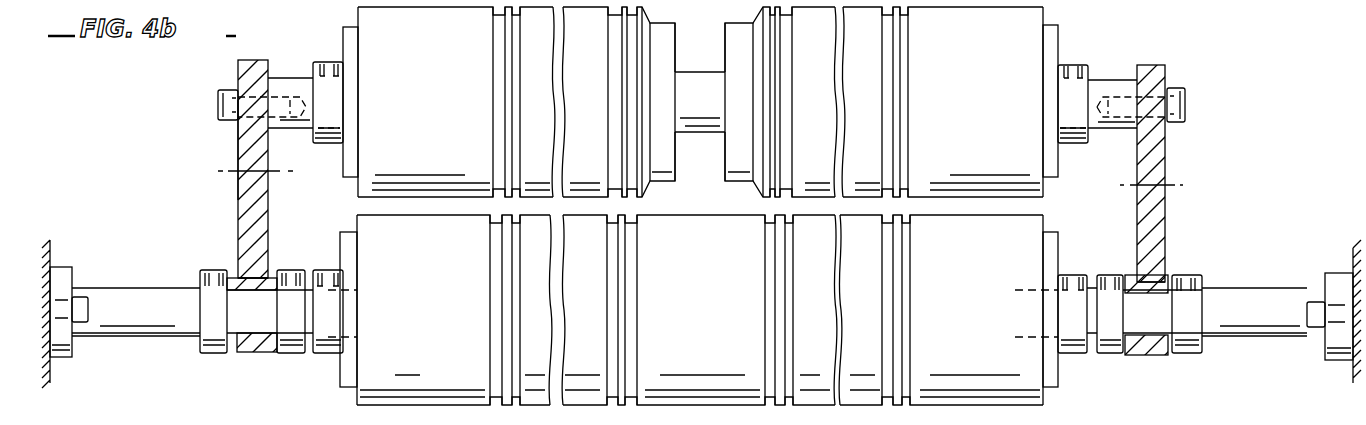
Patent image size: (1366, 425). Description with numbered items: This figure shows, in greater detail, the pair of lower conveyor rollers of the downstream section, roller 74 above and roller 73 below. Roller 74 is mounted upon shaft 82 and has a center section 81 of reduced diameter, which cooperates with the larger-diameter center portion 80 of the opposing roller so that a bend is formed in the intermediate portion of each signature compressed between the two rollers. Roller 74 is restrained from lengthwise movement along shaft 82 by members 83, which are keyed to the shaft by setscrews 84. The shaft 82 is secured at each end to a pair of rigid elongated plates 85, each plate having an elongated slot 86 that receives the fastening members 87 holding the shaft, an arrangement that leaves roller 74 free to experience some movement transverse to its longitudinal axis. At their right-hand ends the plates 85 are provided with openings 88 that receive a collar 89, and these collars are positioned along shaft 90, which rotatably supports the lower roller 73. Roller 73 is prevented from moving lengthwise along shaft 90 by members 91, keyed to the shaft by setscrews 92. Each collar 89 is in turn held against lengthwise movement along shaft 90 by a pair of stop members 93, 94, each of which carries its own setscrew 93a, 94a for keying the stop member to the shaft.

The roller 73 is at (446, 322).
The roller 74 is at (448, 114).
The center portion 80 is at (700, 14).
The center section 81 is at (688, 132).
The shaft 82 is at (287, 78).
The members 83 is at (320, 145).
The setscrews 84 is at (330, 62).
The rigid elongated plates 85 is at (253, 60).
The elongated slot 86 is at (238, 145).
The fastening members 87 is at (222, 103).
The openings 88 is at (248, 353).
The collar 89 is at (273, 276).
The shaft 90 is at (168, 335).
The members 91 is at (328, 355).
The setscrews 92 is at (332, 270).
The stop member 93 is at (289, 355).
The setscrew 93a is at (295, 270).
The stop member 94 is at (217, 355).
The setscrew 94a is at (218, 270).